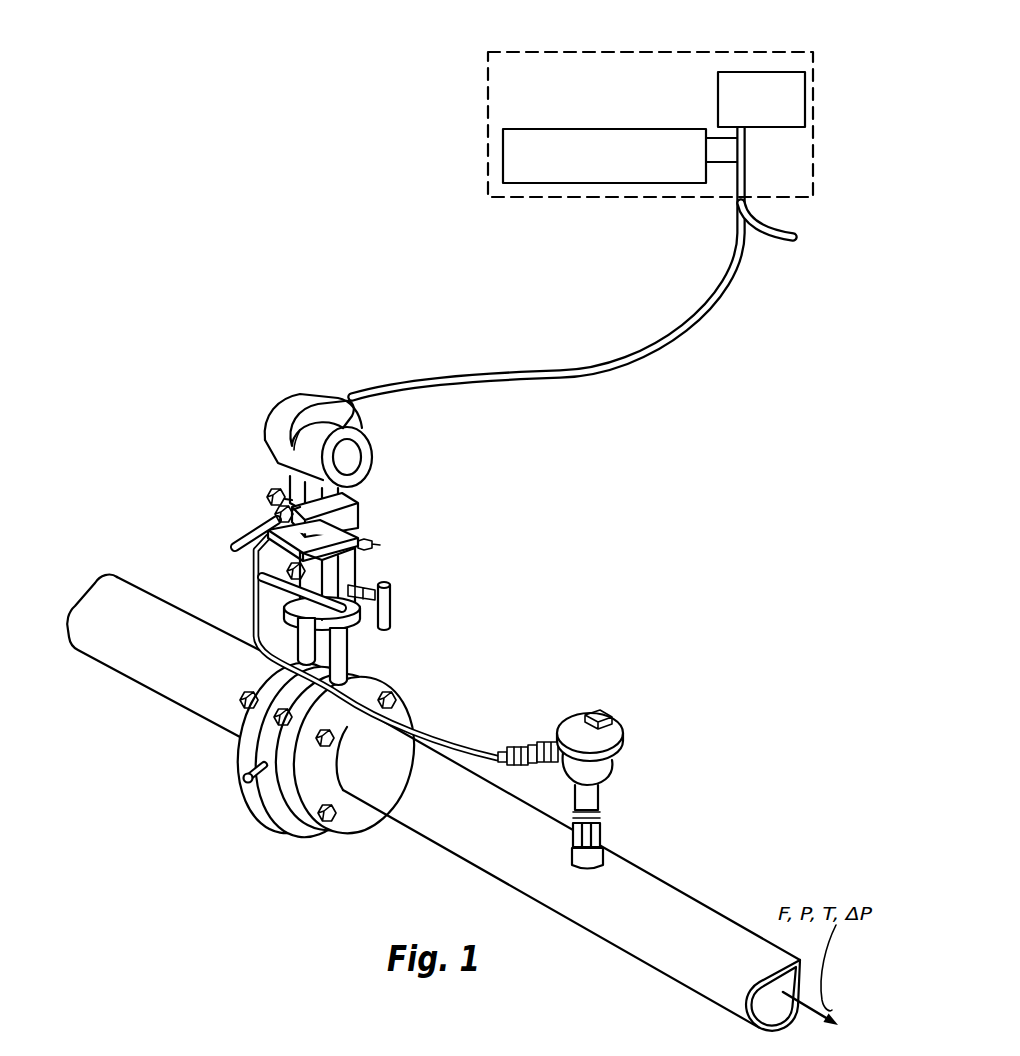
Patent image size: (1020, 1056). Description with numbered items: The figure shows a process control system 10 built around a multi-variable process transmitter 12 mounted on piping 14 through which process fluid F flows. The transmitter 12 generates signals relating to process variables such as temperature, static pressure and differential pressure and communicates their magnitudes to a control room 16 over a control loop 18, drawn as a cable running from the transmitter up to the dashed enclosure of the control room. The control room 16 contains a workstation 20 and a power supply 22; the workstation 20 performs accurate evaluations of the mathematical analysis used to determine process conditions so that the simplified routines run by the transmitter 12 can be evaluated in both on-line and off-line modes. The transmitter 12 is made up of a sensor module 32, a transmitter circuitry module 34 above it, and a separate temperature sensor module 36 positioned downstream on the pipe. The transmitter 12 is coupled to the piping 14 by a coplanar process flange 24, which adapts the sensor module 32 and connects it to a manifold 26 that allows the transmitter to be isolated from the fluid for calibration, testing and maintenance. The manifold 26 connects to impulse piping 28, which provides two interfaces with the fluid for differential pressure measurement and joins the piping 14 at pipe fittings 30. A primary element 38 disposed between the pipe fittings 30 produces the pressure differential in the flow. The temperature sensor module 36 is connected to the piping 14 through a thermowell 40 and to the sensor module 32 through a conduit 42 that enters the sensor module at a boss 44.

The process control system 10 is at (726, 614).
The process transmitter 12 is at (318, 388).
The piping 14 is at (178, 650).
The control room 16 is at (712, 50).
The control loop 18 is at (586, 262).
The workstation 20 is at (563, 129).
The power supply 22 is at (718, 97).
The coplanar process flange 24 is at (352, 532).
The manifold 26 is at (353, 572).
The impulse piping 28 is at (358, 645).
The pipe fittings 30 is at (290, 799).
The sensor module 32 is at (363, 512).
The transmitter circuitry module 34 is at (279, 437).
The temperature sensor module 36 is at (563, 712).
The primary element 38 is at (250, 770).
The thermowell 40 is at (604, 848).
The conduit 42 is at (469, 757).
The boss 44 is at (273, 493).